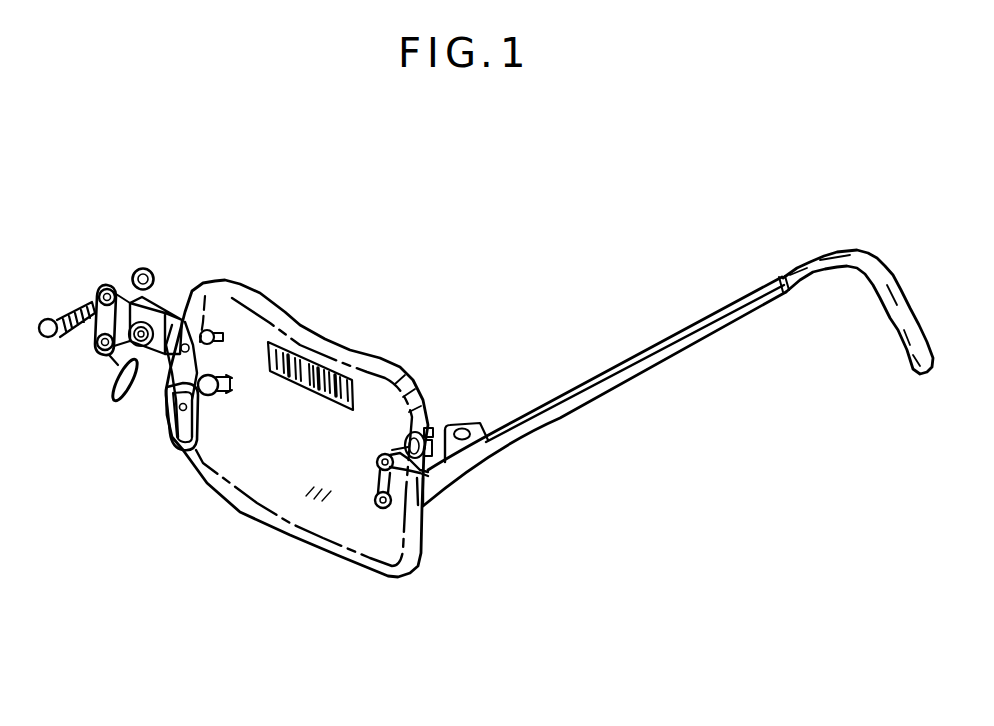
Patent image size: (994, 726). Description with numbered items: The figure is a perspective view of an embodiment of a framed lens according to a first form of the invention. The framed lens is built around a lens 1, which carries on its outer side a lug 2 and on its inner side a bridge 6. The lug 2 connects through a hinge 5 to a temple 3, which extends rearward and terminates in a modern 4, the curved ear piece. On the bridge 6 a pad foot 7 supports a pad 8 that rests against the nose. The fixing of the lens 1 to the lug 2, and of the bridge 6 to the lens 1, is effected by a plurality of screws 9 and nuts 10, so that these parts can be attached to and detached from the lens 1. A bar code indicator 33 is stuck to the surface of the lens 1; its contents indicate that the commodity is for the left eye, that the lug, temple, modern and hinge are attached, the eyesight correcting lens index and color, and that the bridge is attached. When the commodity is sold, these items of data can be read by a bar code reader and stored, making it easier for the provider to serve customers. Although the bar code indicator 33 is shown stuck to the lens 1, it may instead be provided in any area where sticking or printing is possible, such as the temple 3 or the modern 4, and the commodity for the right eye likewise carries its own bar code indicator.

The lens 1 is at (337, 533).
The lug 2 is at (442, 485).
The temple 3 is at (573, 403).
The modern 4 is at (903, 315).
The hinge 5 is at (480, 423).
The bridge 6 is at (166, 294).
The pad foot 7 is at (112, 363).
The pad 8 is at (129, 398).
The screw 9 is at (385, 455).
The nut 10 is at (427, 427).
The bar code indicator 33 is at (298, 355).